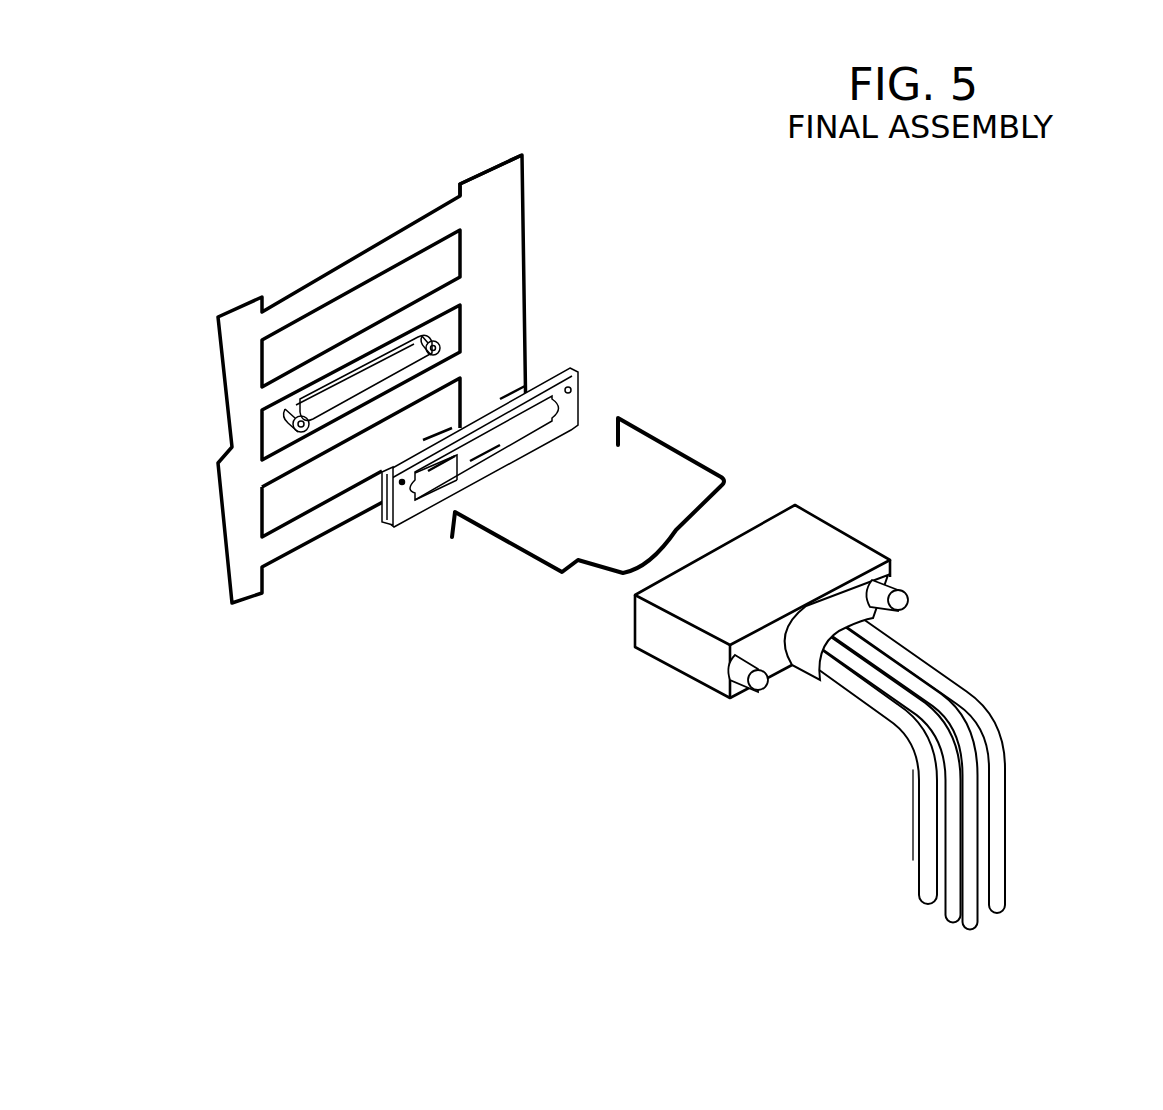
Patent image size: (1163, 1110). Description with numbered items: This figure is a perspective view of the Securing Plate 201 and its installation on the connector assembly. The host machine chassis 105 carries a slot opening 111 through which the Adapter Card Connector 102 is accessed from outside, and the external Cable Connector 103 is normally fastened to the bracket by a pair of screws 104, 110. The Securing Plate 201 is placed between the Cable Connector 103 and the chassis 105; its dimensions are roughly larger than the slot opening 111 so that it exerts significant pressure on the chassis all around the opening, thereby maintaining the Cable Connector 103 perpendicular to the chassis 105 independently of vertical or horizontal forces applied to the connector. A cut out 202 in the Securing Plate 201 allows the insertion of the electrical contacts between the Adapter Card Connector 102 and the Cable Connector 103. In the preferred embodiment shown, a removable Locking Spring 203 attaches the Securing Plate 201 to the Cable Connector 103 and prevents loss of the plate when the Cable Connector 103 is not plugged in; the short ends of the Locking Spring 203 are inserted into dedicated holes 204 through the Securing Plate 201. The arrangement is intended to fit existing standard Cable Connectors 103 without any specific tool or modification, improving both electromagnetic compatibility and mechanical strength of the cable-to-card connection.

The Adapter Card Connector 102 is at (390, 373).
The host machine chassis 105 is at (497, 197).
The screw 110 is at (455, 326).
The slot opening 111 is at (440, 341).
The Securing Plate 201 is at (573, 370).
The dedicated holes 204 is at (570, 389).
The cut out 202 is at (402, 482).
The Locking Spring 203 is at (663, 437).
The Cable Connector 103 is at (824, 520).
The screw 104 is at (905, 584).